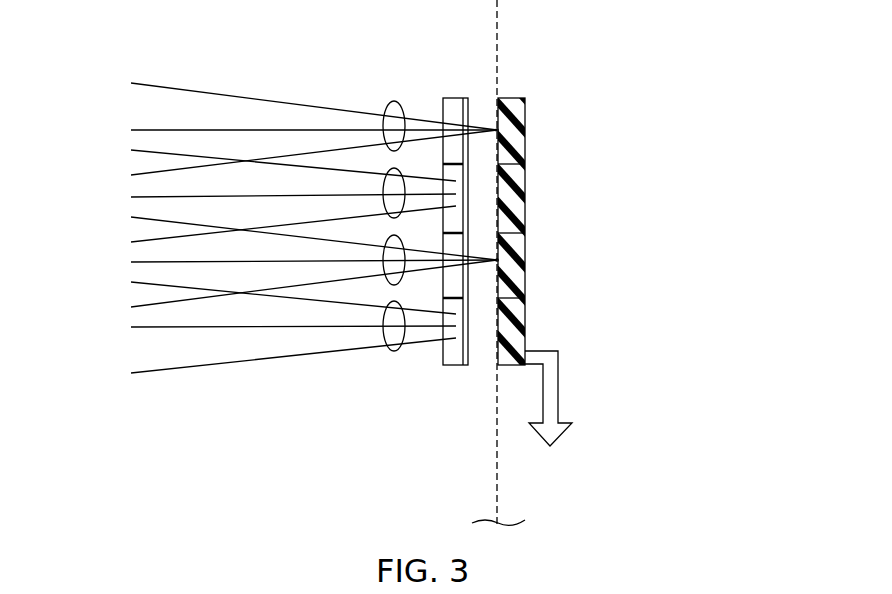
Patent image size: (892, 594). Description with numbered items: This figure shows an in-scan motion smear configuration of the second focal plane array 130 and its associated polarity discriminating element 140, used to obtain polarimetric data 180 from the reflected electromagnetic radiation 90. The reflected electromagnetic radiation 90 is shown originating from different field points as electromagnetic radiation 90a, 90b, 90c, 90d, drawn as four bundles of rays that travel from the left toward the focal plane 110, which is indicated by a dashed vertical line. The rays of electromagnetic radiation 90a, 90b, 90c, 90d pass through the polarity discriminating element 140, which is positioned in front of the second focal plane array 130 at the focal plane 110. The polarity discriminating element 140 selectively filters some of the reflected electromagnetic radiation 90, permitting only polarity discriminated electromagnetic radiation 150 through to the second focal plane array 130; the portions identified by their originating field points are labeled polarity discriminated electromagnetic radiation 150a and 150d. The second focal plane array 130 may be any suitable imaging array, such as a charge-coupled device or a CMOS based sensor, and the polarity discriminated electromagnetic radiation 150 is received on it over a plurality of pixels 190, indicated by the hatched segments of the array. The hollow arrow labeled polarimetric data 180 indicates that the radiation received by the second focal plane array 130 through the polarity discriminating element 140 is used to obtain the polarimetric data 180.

The reflected electromagnetic radiation 90 is at (168, 52).
The electromagnetic radiation from a first field point 90a is at (393, 101).
The electromagnetic radiation from a second field point 90b is at (388, 168).
The electromagnetic radiation from a third field point 90c is at (390, 285).
The electromagnetic radiation from a fourth field point 90d is at (395, 352).
The focal plane 110 is at (499, 26).
The second focal plane array 130 is at (513, 86).
The polarity discriminating element 140 is at (455, 97).
The polarity discriminated electromagnetic radiation 150 is at (487, 145).
The polarity discriminated electromagnetic radiation from a first field point 150a is at (494, 128).
The polarity discriminated electromagnetic radiation from a fourth field point 150d is at (492, 266).
The polarimetric data 180 is at (559, 404).
The pixels 190 is at (521, 133).